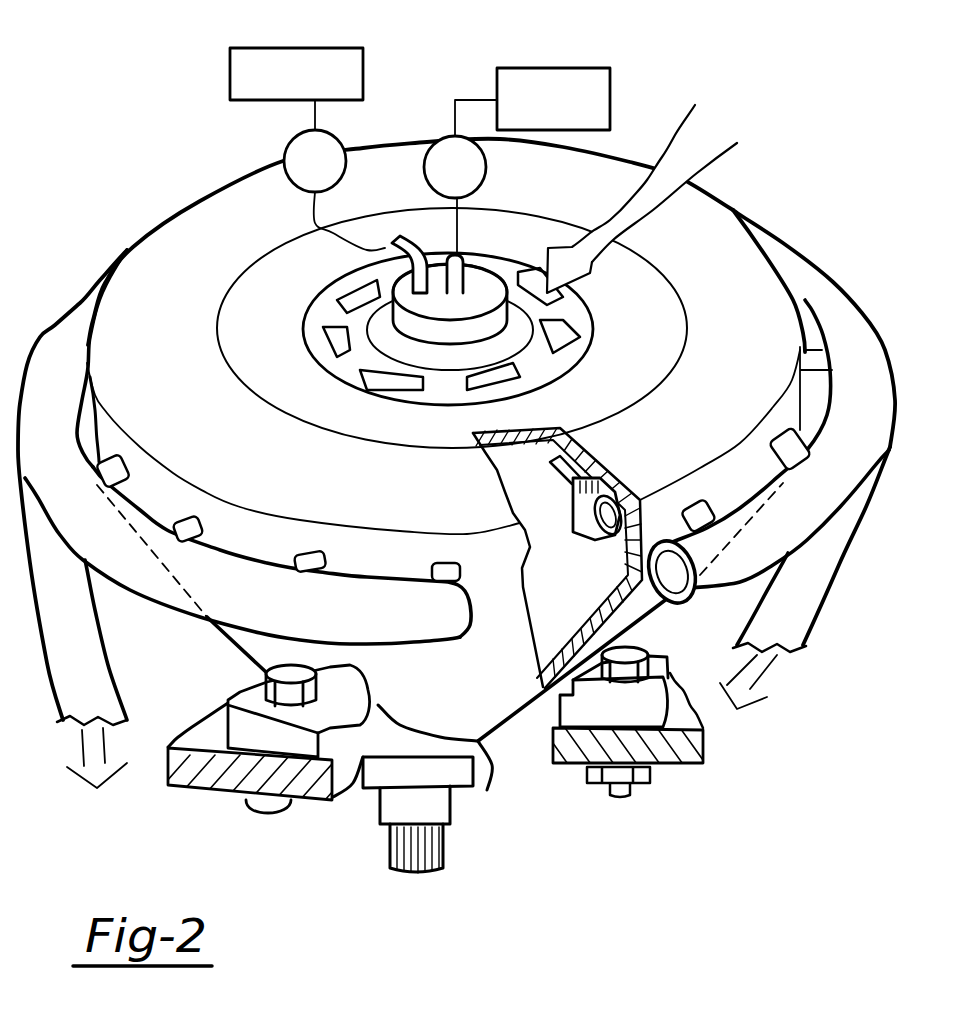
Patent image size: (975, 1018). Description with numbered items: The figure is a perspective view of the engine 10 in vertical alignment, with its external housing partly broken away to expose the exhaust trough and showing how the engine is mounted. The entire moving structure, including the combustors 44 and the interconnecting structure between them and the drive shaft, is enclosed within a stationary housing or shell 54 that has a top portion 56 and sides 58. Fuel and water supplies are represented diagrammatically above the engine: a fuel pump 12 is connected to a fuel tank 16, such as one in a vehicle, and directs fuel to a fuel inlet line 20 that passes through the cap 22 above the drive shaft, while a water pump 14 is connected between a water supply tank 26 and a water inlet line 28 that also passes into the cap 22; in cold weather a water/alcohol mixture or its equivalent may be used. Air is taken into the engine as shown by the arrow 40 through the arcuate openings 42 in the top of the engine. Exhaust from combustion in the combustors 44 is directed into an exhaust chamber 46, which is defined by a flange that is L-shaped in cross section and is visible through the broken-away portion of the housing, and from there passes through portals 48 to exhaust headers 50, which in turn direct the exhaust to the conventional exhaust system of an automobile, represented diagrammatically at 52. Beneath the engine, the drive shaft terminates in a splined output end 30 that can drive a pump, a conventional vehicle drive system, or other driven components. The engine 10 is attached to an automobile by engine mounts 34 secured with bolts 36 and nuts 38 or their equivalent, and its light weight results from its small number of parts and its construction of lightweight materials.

The engine 10 is at (790, 177).
The fuel pump 12 is at (446, 140).
The water pump 14 is at (283, 163).
The fuel tank 16 is at (596, 68).
The fuel inlet line 20 is at (463, 262).
The cap 22 is at (480, 270).
The water supply tank 26 is at (355, 48).
The water inlet line 28 is at (390, 246).
The splined output end 30 is at (455, 868).
The engine mounts 34 is at (222, 733).
The bolts 36 is at (337, 683).
The nuts 38 is at (263, 812).
The arrow 40 is at (700, 108).
The arcuate openings 42 is at (575, 330).
The combustors 44 is at (594, 538).
The exhaust chamber 46 is at (562, 518).
The portals 48 is at (818, 347).
The exhaust headers 50 is at (893, 402).
The exhaust system 52 is at (820, 600).
The stationary housing or shell 54 is at (778, 240).
The top portion 56 is at (187, 233).
The sides 58 is at (486, 740).